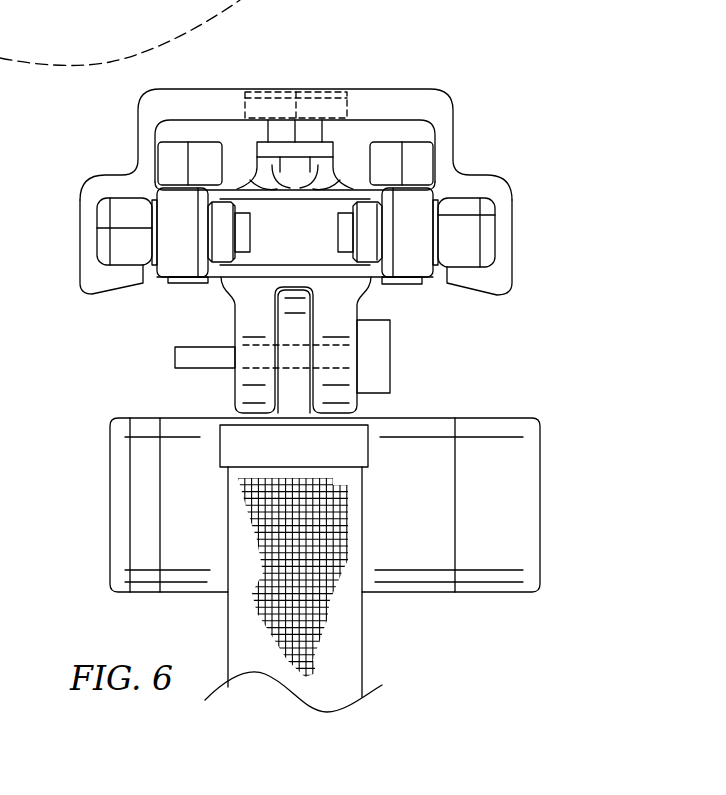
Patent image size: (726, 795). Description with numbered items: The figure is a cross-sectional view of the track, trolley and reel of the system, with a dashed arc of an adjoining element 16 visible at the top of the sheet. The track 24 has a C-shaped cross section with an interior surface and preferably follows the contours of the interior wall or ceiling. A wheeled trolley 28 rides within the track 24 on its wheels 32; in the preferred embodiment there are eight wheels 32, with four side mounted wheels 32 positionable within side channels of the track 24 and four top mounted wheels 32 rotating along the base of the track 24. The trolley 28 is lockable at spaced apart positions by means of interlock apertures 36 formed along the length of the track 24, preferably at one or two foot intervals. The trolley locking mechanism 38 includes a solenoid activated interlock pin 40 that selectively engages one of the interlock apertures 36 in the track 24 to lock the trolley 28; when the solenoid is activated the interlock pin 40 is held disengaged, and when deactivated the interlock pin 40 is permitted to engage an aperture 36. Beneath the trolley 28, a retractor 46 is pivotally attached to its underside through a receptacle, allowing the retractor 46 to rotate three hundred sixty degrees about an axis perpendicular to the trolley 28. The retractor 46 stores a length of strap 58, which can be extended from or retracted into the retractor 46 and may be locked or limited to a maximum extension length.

The wheel 16 is at (0, 0).
The track 24 is at (443, 117).
The wheeled trolley 28 is at (297, 228).
The wheels 32 is at (178, 159).
The interlock apertures 36 is at (272, 95).
The trolley locking mechanism 38 is at (305, 137).
The interlock pin 40 is at (283, 130).
The retractor 46 is at (530, 497).
The strap 58 is at (350, 660).